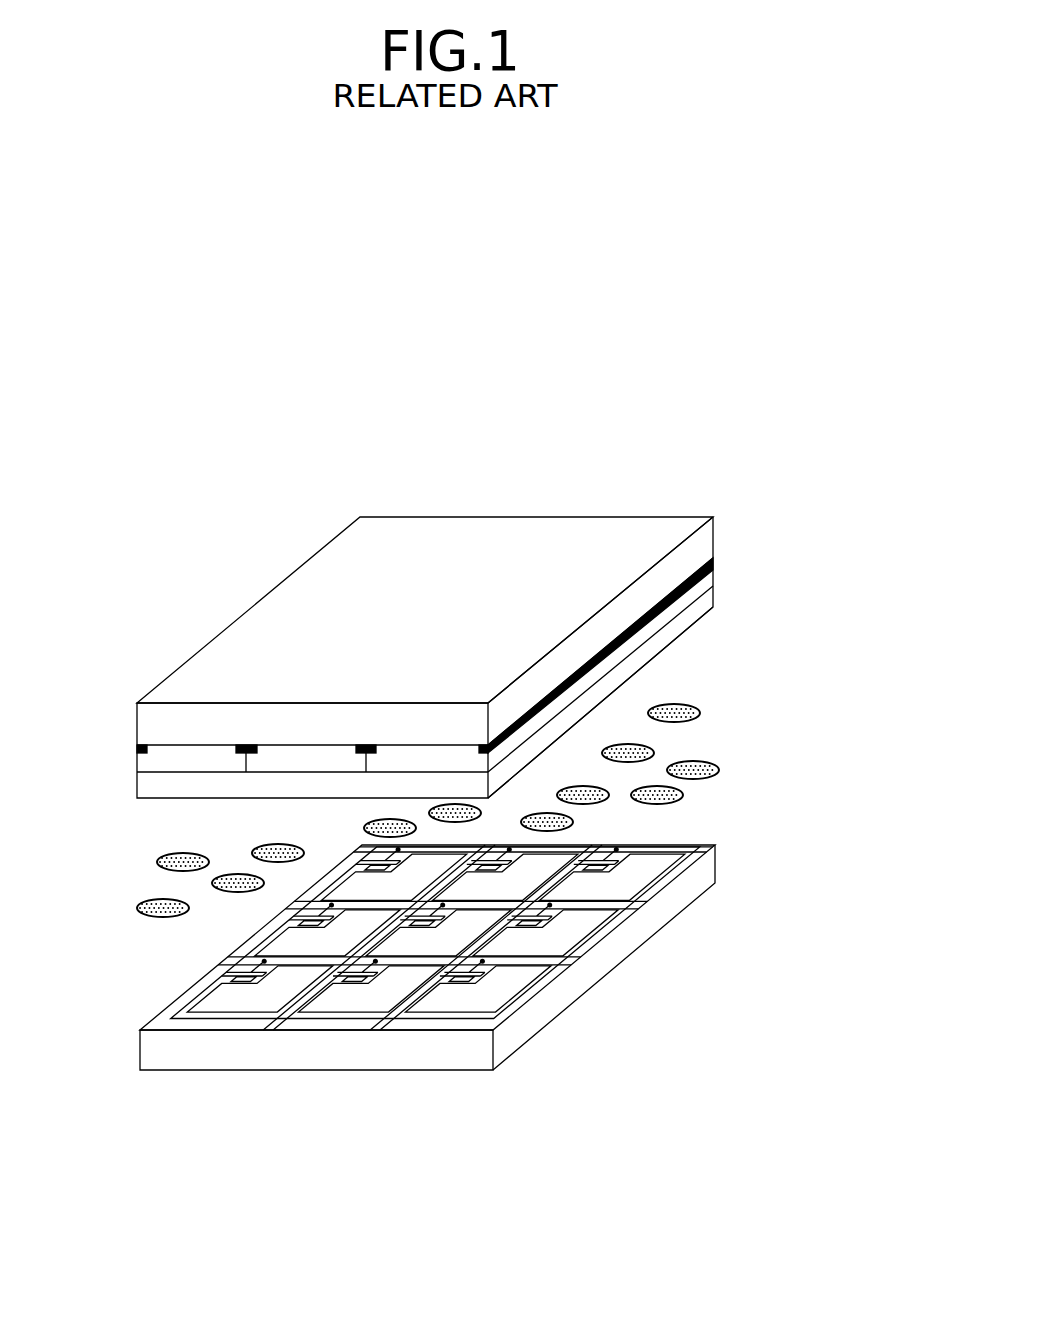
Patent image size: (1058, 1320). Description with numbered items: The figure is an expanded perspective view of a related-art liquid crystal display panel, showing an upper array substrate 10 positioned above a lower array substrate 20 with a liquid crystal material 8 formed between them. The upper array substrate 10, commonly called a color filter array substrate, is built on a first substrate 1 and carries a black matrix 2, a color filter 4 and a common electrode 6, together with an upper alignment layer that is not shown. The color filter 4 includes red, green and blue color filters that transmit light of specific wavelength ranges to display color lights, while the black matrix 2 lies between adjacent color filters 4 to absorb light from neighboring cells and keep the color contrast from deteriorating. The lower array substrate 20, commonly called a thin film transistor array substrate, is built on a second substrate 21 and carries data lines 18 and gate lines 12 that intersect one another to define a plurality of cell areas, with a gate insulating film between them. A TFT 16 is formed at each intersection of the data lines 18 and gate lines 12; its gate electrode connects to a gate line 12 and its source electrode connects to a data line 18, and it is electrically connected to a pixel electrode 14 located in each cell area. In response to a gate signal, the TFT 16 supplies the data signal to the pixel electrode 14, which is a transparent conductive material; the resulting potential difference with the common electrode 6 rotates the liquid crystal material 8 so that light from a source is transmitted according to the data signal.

The first substrate 1 is at (712, 542).
The black matrix 2 is at (137, 752).
The color filter 4 is at (712, 575).
The common electrode 6 is at (712, 600).
The liquid crystal material 8 is at (700, 712).
The upper array substrate 10 is at (469, 628).
The gate lines 12 is at (687, 842).
The pixel electrode 14 is at (500, 985).
The TFT 16 is at (468, 978).
The data lines 18 is at (187, 1003).
The lower array substrate 20 is at (475, 1013).
The second substrate 21 is at (715, 872).